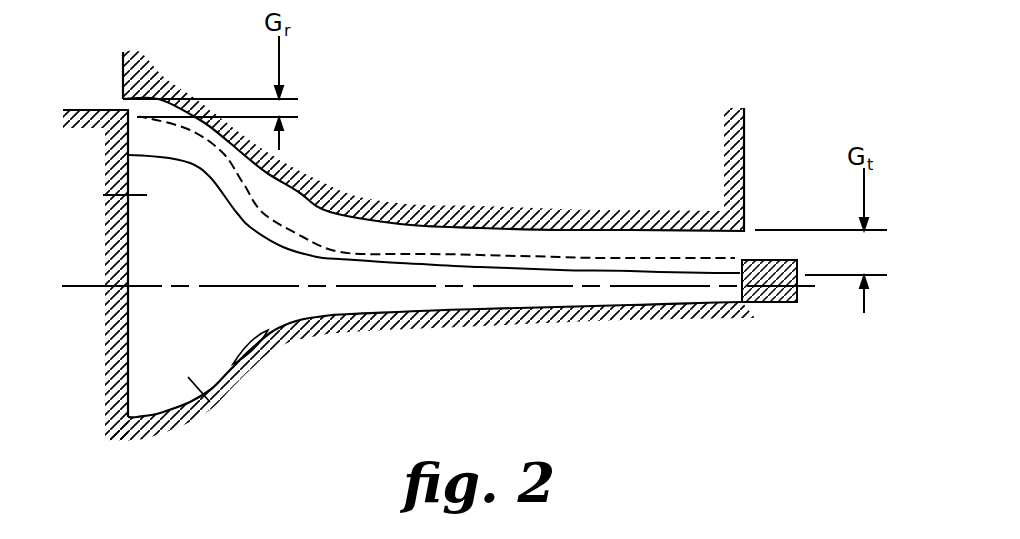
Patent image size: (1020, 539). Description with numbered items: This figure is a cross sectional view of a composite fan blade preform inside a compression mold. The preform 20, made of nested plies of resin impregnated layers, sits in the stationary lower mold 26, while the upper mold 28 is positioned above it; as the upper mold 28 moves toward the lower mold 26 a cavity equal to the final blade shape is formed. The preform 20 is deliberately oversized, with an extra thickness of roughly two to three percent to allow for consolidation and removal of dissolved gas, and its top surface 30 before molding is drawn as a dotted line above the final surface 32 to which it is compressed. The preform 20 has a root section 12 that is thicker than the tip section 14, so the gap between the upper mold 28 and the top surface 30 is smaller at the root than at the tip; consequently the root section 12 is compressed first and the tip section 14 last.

The root section 12 is at (215, 393).
The tip section 14 is at (755, 295).
The preform 20 is at (105, 197).
The stationary lower mold 26 is at (538, 315).
The upper mold 28 is at (744, 115).
The top surface 30 is at (338, 254).
The final surface 32 is at (642, 279).